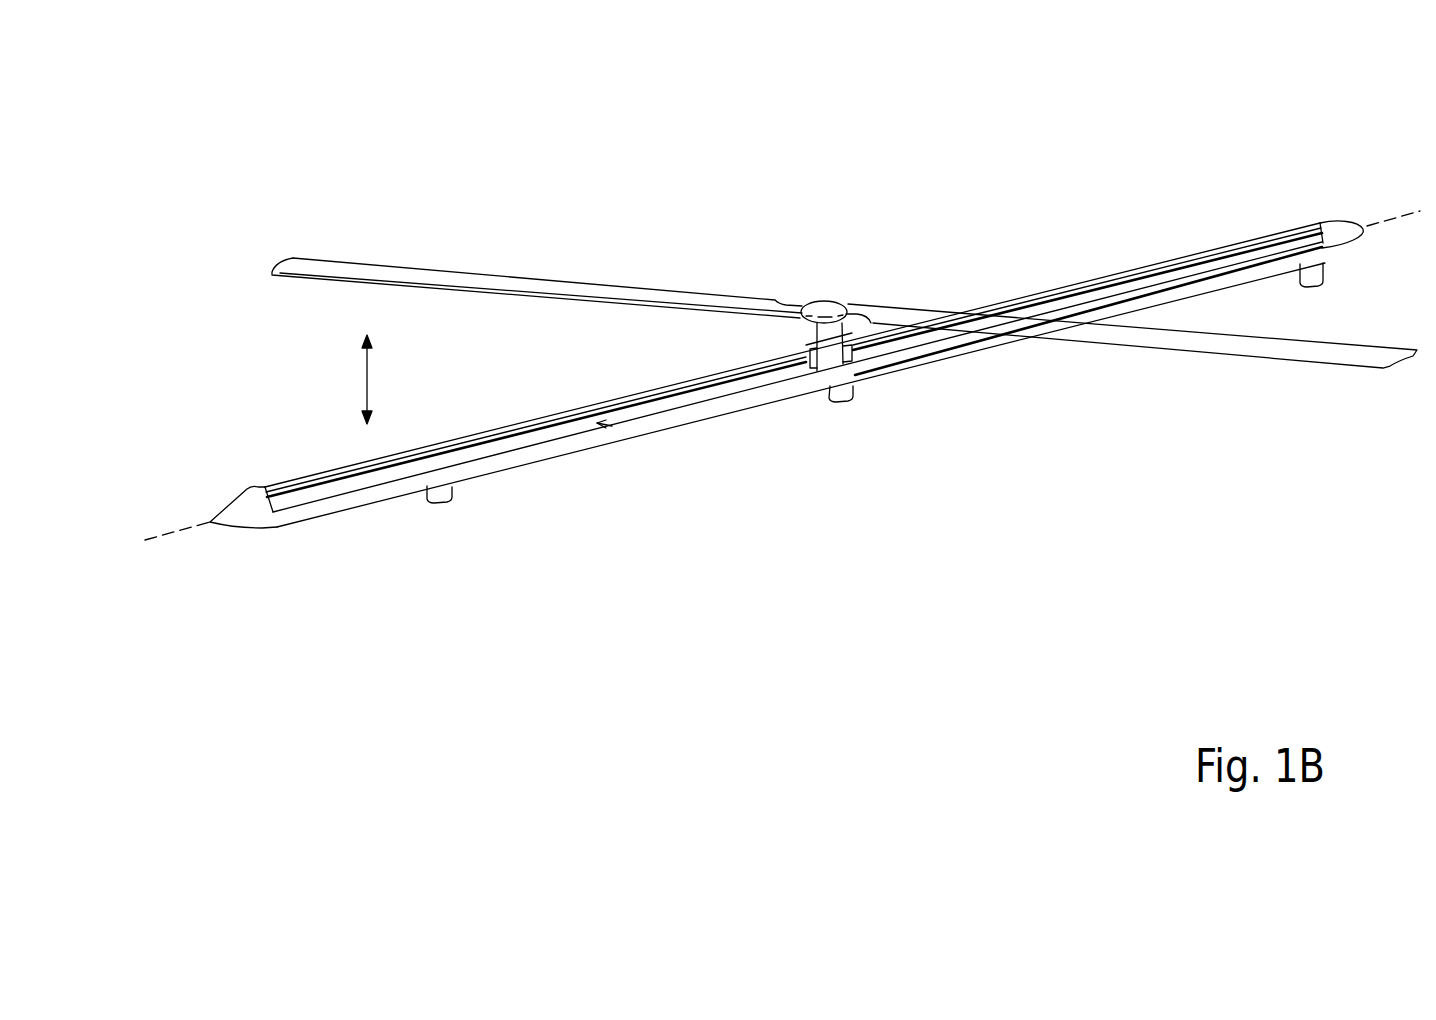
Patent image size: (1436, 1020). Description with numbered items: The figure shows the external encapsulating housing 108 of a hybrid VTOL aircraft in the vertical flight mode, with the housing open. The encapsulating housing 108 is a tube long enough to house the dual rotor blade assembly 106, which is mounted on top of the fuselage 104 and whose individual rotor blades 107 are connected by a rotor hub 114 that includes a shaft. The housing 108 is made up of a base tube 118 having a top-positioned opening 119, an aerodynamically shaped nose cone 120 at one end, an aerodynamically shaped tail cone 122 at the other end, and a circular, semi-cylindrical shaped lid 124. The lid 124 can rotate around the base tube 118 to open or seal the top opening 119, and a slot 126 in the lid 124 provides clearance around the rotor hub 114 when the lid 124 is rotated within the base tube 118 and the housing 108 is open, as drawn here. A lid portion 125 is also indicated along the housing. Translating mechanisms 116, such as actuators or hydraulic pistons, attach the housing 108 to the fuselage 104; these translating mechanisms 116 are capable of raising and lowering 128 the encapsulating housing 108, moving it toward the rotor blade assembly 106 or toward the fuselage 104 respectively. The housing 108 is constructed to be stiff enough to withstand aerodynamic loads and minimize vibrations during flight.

The fuselage 104 is at (176, 527).
The dual rotor blade assembly 106 is at (826, 301).
The rotor blade 107 is at (1361, 369).
The external encapsulating housing 108 is at (1222, 75).
The rotor hub 114 is at (848, 393).
The translating mechanism 116 is at (446, 504).
The base tube 118 is at (680, 428).
The top-positioned opening 119 is at (603, 424).
The nose cone 120 is at (218, 524).
The tail cone 122 is at (1365, 233).
The lid 124 is at (545, 433).
The groove 125 is at (1135, 286).
The slot 126 is at (817, 352).
The raising and lowering 128 is at (369, 380).